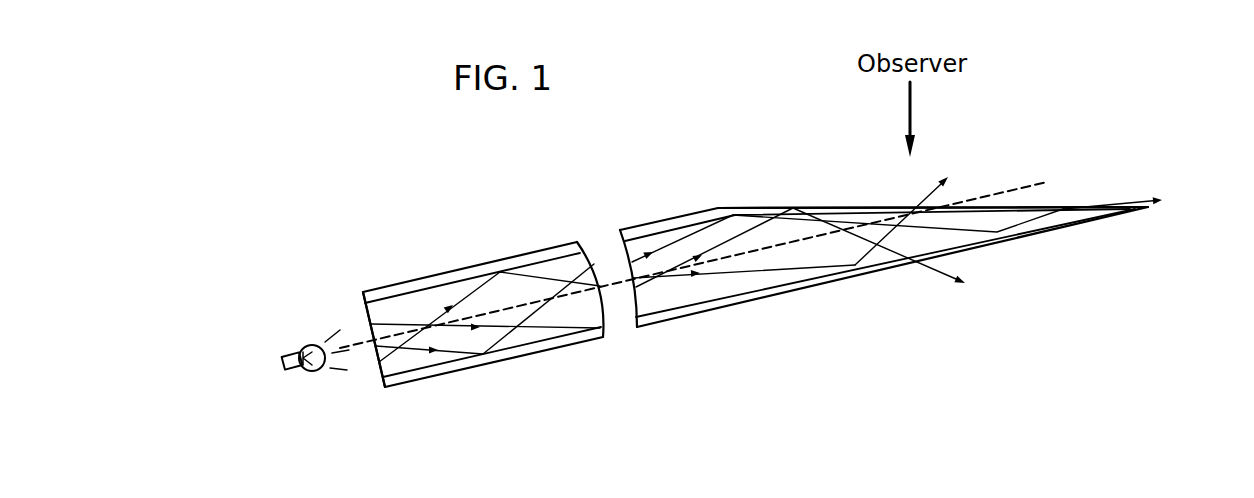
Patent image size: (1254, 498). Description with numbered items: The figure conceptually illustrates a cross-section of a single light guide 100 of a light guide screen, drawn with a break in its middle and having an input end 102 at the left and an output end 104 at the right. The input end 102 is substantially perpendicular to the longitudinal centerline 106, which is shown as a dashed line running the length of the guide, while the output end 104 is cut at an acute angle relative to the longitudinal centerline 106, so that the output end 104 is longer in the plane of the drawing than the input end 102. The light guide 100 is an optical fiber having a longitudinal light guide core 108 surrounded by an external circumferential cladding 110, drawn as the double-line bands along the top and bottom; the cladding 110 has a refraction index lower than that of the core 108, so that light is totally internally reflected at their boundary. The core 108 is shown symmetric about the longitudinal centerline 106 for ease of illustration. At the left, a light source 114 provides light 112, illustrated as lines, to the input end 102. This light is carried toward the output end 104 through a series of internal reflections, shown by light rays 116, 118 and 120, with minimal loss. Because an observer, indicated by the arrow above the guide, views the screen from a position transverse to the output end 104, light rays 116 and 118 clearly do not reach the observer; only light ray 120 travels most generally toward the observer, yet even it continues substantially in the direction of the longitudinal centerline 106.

The light guide 100 is at (492, 186).
The input end 102 is at (378, 374).
The output end 104 is at (789, 207).
The longitudinal centerline 106 is at (715, 255).
The light guide core 108 is at (493, 289).
The cladding 110 is at (383, 289).
The light 112 is at (347, 369).
The light source 114 is at (307, 343).
The light ray 116 is at (900, 254).
The light ray 118 is at (1131, 192).
The light ray 120 is at (924, 214).